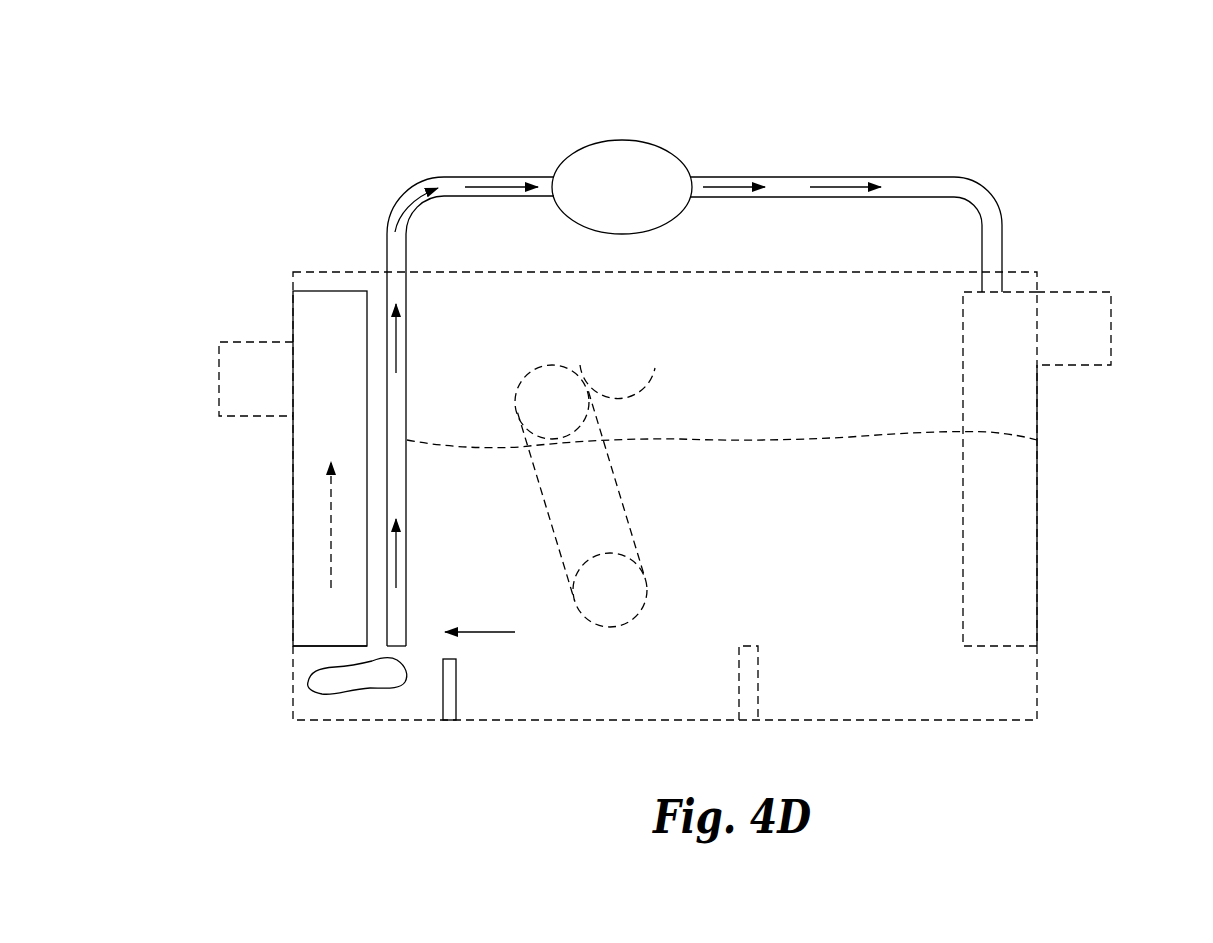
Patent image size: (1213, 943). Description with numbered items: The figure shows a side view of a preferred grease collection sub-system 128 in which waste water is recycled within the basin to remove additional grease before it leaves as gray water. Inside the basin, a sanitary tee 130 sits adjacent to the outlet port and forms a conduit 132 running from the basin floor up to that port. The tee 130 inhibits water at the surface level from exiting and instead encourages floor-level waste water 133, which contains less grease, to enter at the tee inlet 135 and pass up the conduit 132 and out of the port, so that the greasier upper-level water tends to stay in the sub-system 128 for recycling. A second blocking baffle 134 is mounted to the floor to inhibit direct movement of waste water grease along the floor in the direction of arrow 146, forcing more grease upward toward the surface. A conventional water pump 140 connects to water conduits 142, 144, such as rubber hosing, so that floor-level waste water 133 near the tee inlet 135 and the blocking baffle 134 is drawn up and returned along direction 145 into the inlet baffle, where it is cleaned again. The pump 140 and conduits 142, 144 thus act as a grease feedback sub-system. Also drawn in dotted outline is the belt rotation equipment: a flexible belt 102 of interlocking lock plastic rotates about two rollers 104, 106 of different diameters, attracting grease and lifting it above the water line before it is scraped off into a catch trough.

The grease collection sub-system 128 is at (737, 99).
The sanitary tee 130 is at (320, 422).
The conduit 132 is at (331, 537).
The tee inlet 135 is at (312, 648).
The floor-level waste water 133 is at (350, 683).
The second blocking baffle 134 is at (453, 687).
The arrow 146 is at (478, 632).
The direction 145 is at (515, 187).
The water conduit 142 is at (446, 186).
The water pump 140 is at (617, 140).
The water conduit 144 is at (984, 184).
The flexible belt 102 is at (615, 480).
The roller 104 is at (554, 372).
The roller 106 is at (608, 590).